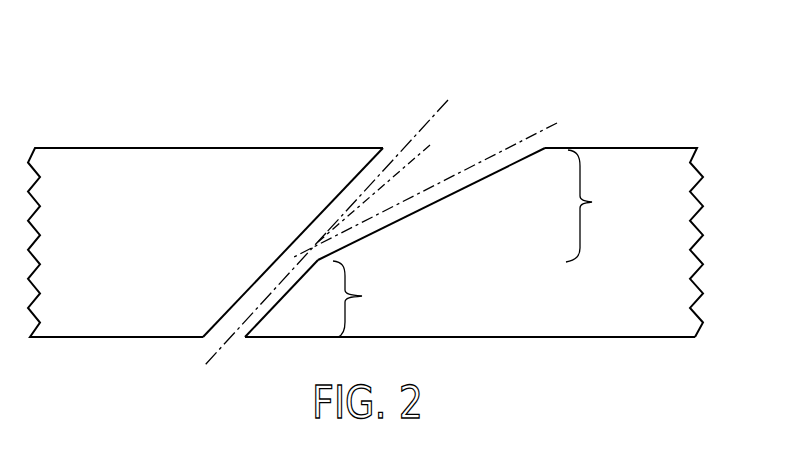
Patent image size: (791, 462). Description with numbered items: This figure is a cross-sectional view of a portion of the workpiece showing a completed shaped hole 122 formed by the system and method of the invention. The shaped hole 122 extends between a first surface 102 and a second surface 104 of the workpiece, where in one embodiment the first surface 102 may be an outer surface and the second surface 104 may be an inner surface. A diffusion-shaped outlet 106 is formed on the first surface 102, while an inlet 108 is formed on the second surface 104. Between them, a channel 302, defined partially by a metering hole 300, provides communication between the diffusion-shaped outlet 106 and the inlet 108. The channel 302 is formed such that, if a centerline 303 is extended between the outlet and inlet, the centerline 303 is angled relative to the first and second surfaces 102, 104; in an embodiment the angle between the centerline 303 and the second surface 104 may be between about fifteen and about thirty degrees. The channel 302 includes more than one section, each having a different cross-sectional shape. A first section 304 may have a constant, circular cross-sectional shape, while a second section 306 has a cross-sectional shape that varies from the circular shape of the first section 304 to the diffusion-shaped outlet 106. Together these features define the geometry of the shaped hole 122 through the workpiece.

The first surface 102 is at (624, 147).
The second surface 104 is at (554, 338).
The diffusion-shaped outlet 106 is at (466, 197).
The inlet 108 is at (231, 341).
The shaped hole 122 is at (413, 112).
The metering hole 300 is at (246, 290).
The channel 302 is at (392, 150).
The centerline 303 is at (448, 103).
The first section 304 is at (331, 298).
The second section 306 is at (608, 206).